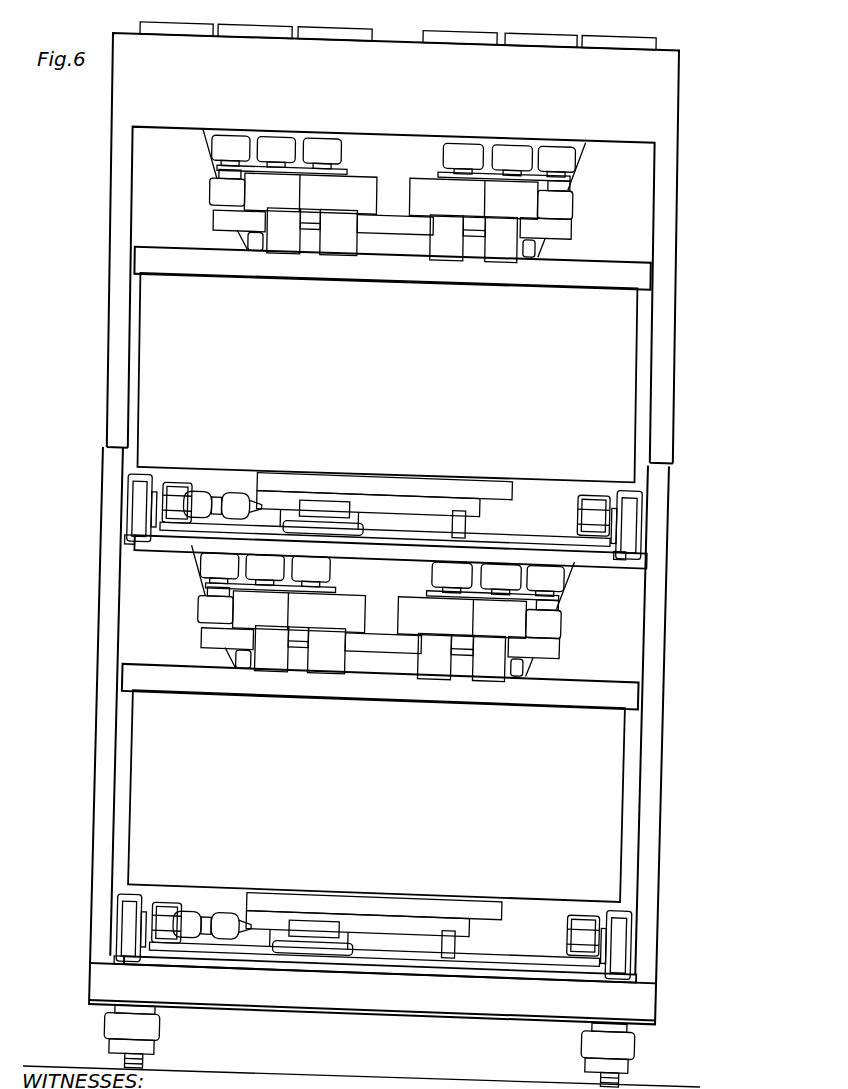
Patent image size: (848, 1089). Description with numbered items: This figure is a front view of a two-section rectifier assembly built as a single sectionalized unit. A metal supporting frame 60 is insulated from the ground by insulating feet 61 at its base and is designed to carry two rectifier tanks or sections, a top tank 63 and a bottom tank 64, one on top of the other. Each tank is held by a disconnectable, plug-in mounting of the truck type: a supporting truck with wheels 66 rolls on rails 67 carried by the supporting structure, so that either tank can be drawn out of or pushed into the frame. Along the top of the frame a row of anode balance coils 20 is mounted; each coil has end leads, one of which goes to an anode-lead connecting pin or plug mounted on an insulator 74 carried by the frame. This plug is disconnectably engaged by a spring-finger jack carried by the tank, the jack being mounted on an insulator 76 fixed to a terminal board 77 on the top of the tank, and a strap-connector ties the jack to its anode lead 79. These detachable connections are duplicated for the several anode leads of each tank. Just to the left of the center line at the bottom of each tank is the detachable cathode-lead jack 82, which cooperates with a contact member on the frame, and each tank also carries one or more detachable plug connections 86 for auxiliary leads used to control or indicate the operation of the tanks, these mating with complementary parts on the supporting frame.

The anode balance coil 20 is at (397, 53).
The supporting frame 60 is at (566, 265).
The insulating foot 61 is at (370, 1045).
The top tank 63 is at (333, 330).
The bottom tank 64 is at (344, 772).
The wheel 66 is at (382, 726).
The rail 67 is at (34, 506).
The insulator 74 is at (401, 104).
The insulator 76 is at (387, 408).
The terminal board 77 is at (389, 401).
The anode lead 79 is at (385, 445).
The cathode-lead jack 82 is at (330, 686).
The auxiliary plug connection 86 is at (339, 480).